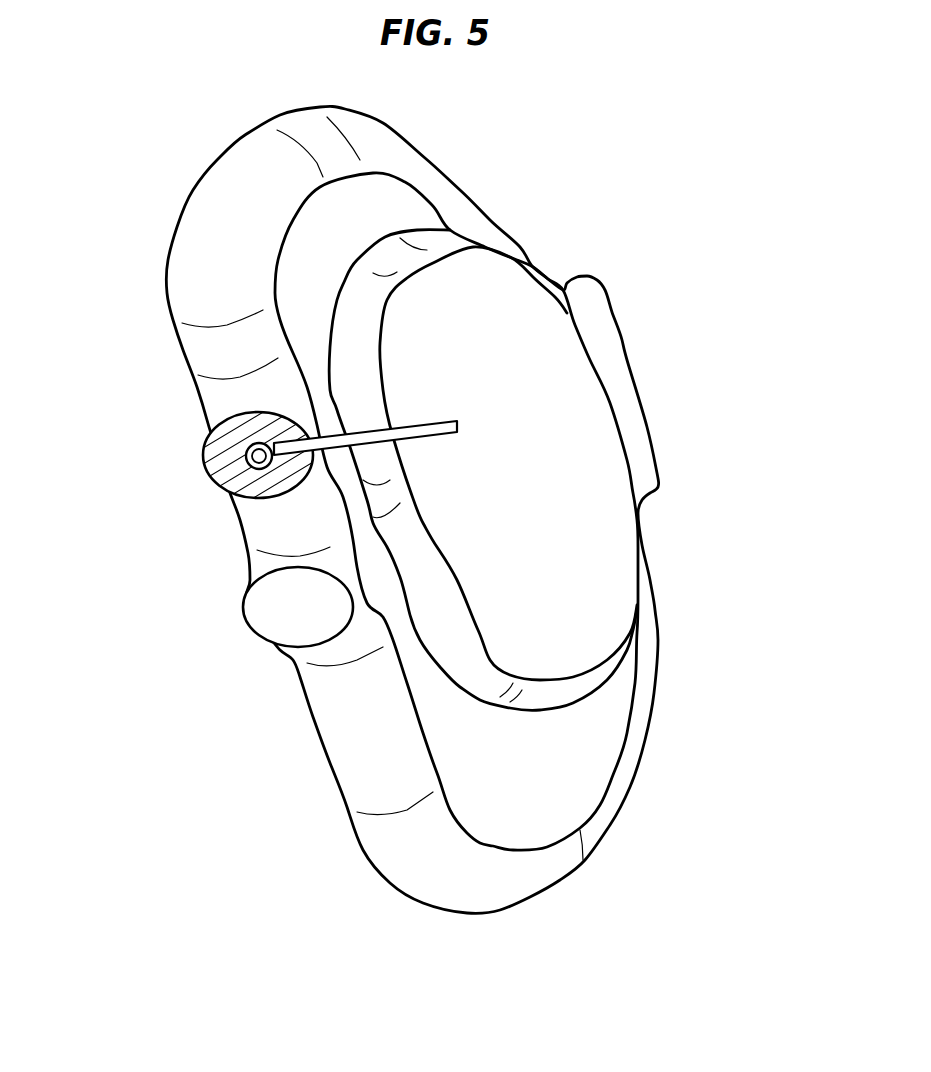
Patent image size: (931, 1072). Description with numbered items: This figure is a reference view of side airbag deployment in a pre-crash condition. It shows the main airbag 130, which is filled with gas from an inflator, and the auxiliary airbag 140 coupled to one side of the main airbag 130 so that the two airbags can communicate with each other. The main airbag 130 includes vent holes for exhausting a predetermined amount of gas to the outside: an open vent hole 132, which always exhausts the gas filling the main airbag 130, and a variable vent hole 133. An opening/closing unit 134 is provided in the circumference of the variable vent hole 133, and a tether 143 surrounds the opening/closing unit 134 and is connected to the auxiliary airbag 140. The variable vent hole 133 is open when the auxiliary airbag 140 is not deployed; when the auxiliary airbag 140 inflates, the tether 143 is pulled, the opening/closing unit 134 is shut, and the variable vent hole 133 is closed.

The main airbag 130 is at (587, 743).
The open vent hole 132 is at (283, 610).
The variable vent hole 133 is at (205, 476).
The opening/closing unit 134 is at (207, 453).
The auxiliary airbag 140 is at (620, 578).
The tether 143 is at (417, 433).